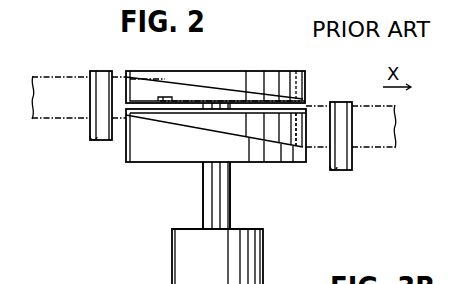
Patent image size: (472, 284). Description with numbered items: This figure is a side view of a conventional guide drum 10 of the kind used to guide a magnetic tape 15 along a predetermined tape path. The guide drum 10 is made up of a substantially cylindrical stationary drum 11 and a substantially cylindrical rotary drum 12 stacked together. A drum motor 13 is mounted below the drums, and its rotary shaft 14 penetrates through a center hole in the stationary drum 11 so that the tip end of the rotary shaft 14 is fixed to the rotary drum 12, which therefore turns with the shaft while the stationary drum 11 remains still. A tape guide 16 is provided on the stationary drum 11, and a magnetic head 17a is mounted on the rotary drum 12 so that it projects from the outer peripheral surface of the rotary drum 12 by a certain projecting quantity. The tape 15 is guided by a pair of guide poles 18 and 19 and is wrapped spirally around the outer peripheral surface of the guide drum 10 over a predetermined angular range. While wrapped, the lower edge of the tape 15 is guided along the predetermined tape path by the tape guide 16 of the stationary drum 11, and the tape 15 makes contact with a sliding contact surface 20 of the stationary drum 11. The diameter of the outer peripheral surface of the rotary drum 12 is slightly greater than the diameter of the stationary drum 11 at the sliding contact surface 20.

The guide drum 10 is at (219, 71).
The stationary drum 11 is at (290, 162).
The rotary drum 12 is at (274, 84).
The drum motor 13 is at (263, 262).
The rotary shaft 14 is at (203, 193).
The magnetic tape 15 is at (80, 76).
The tape guide 16 is at (260, 162).
The magnetic head 17a is at (163, 96).
The guide pole 18 is at (90, 126).
The guide pole 19 is at (352, 152).
The sliding contact surface 20 is at (297, 127).